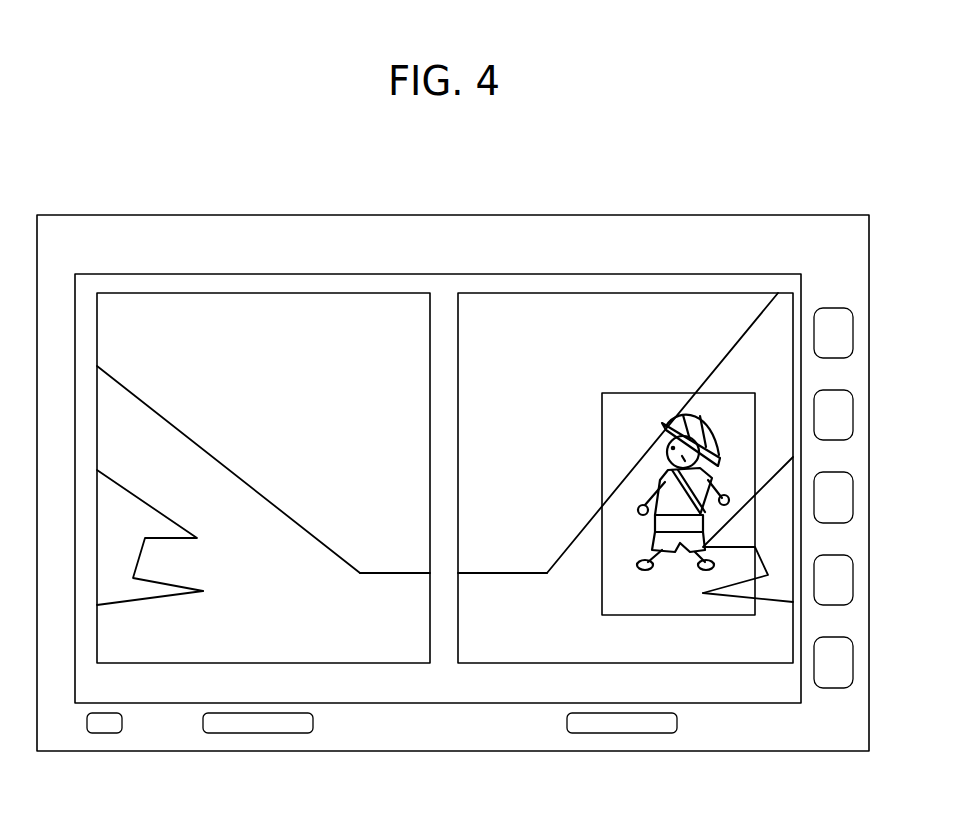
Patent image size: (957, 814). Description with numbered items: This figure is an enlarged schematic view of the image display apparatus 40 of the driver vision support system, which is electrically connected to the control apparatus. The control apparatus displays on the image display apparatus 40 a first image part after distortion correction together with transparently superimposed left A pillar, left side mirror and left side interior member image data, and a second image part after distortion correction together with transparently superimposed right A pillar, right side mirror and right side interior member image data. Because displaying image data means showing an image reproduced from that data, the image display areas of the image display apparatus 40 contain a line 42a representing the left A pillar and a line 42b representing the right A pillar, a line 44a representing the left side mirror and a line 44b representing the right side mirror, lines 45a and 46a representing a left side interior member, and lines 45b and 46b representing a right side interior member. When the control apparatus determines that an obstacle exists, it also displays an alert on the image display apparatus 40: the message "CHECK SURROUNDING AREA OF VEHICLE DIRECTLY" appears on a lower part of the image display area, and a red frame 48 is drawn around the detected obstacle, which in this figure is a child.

The image display apparatus 40 is at (760, 214).
The line representing the left A pillar 42a is at (153, 505).
The line representing the right A pillar 42b is at (780, 466).
The line representing the left side mirror 44a is at (162, 580).
The line representing the right side mirror 44b is at (730, 585).
The line representing a left side interior member 45a is at (393, 571).
The line representing a right side interior member 45b is at (490, 571).
The line representing a left side interior member 46a is at (135, 602).
The line representing a right side interior member 46b is at (743, 597).
The red frame 48 is at (615, 393).